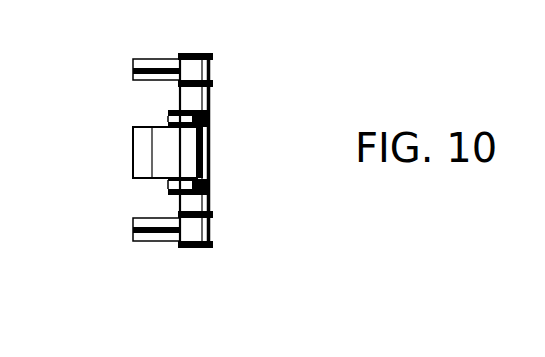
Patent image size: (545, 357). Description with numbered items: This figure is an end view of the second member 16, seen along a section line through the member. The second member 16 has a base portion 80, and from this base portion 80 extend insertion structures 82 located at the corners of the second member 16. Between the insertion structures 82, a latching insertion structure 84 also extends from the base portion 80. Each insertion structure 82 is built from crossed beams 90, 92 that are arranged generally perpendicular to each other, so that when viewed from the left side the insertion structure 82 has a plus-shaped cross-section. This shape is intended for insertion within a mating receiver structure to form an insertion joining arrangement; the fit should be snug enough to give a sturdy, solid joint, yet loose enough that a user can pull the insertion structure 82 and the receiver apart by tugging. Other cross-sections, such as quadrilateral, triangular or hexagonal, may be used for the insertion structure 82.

The base portion 80 is at (207, 102).
The insertion structure 82 is at (150, 60).
The latching insertion structure 84 is at (132, 153).
The crossed beam 90 is at (140, 60).
The crossed beam 92 is at (135, 73).
The second member 16 is at (290, 306).